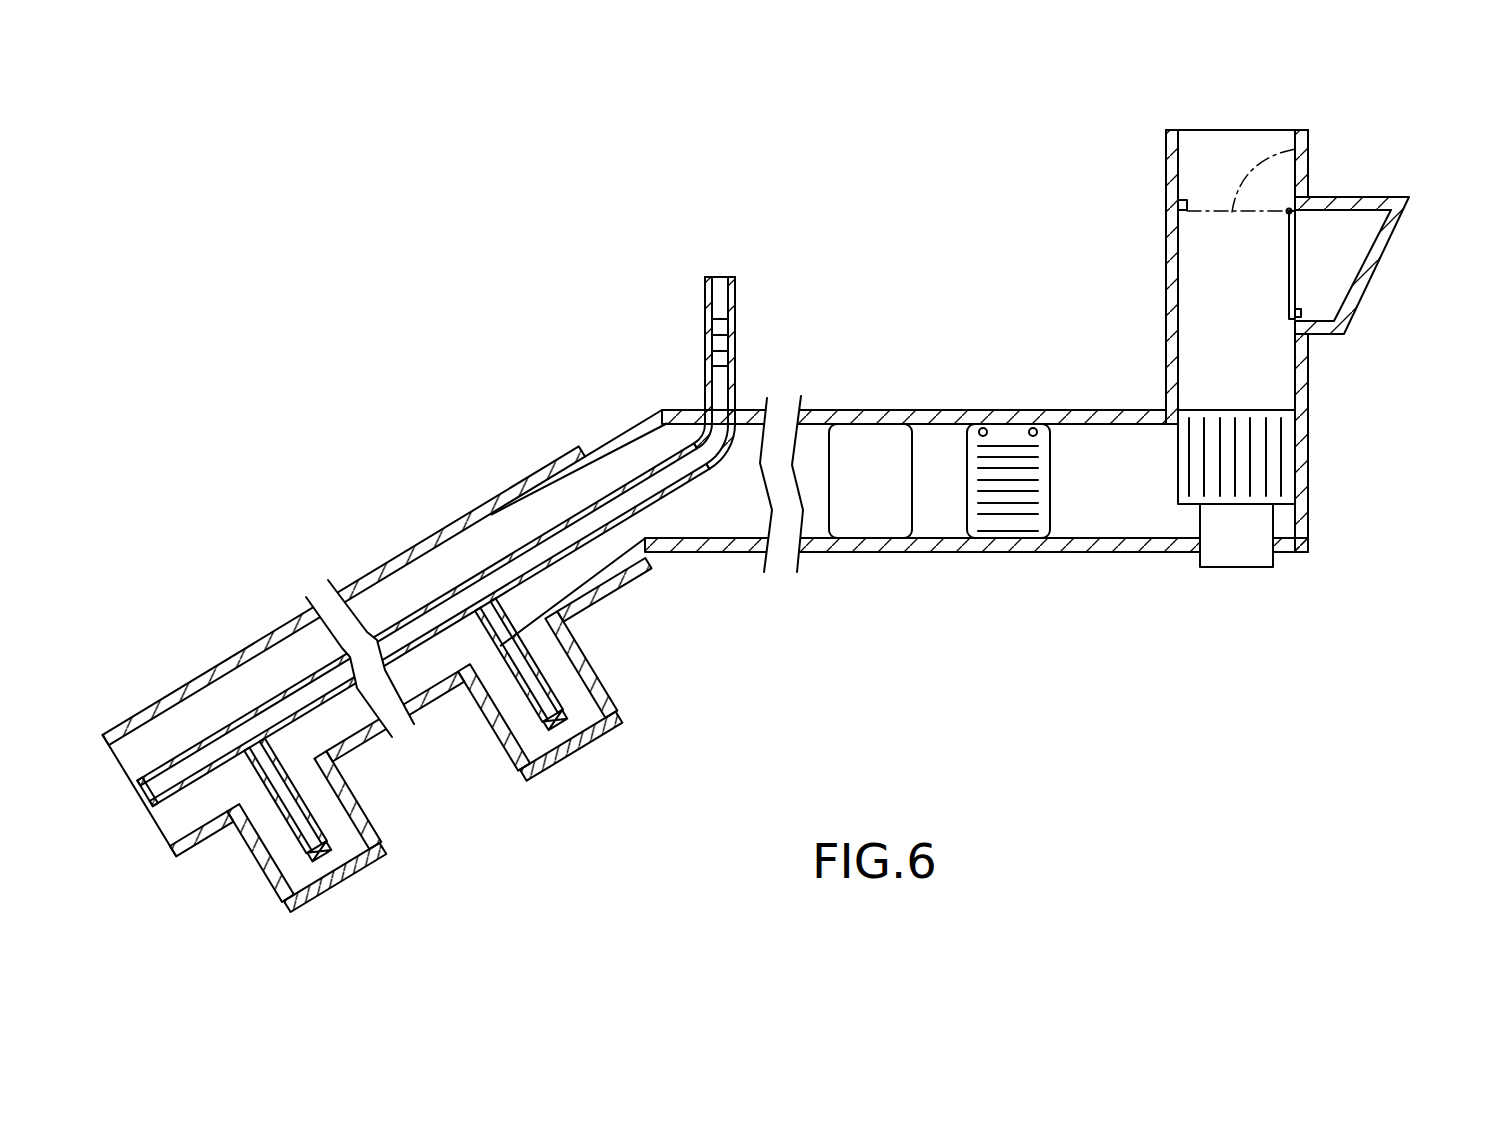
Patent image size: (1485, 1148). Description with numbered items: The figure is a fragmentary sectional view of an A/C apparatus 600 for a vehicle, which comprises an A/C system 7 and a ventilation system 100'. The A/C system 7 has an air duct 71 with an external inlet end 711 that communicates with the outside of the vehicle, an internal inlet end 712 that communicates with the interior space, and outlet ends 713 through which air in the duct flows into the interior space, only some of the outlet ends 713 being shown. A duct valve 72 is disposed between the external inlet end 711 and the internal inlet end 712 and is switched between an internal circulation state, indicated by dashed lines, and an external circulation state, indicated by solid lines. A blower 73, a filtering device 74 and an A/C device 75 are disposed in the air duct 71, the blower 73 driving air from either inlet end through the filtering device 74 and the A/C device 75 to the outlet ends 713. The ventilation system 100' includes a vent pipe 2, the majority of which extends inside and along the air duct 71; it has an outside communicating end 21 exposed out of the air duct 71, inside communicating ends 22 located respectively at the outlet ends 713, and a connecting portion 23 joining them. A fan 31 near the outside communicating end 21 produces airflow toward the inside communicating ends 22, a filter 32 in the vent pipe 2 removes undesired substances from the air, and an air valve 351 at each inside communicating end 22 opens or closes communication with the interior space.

The A/C apparatus 600 is at (330, 154).
The ventilation system 100' is at (451, 578).
The vent pipe 2 is at (636, 473).
The outside communicating end 21 is at (737, 278).
The inside communicating ends 22 is at (308, 855).
The connecting portion 23 is at (535, 530).
The fan 31 is at (724, 327).
The filter 32 is at (722, 360).
The air valve 351 is at (350, 875).
The outlet ends 713 is at (315, 900).
The A/C system 7 is at (1162, 198).
The air duct 71 is at (1118, 548).
The external inlet end 711 is at (1215, 128).
The internal inlet end 712 is at (1386, 255).
The duct valve 72 is at (1291, 270).
The blower 73 is at (1262, 462).
The filtering device 74 is at (1005, 512).
The A/C device 75 is at (873, 515).